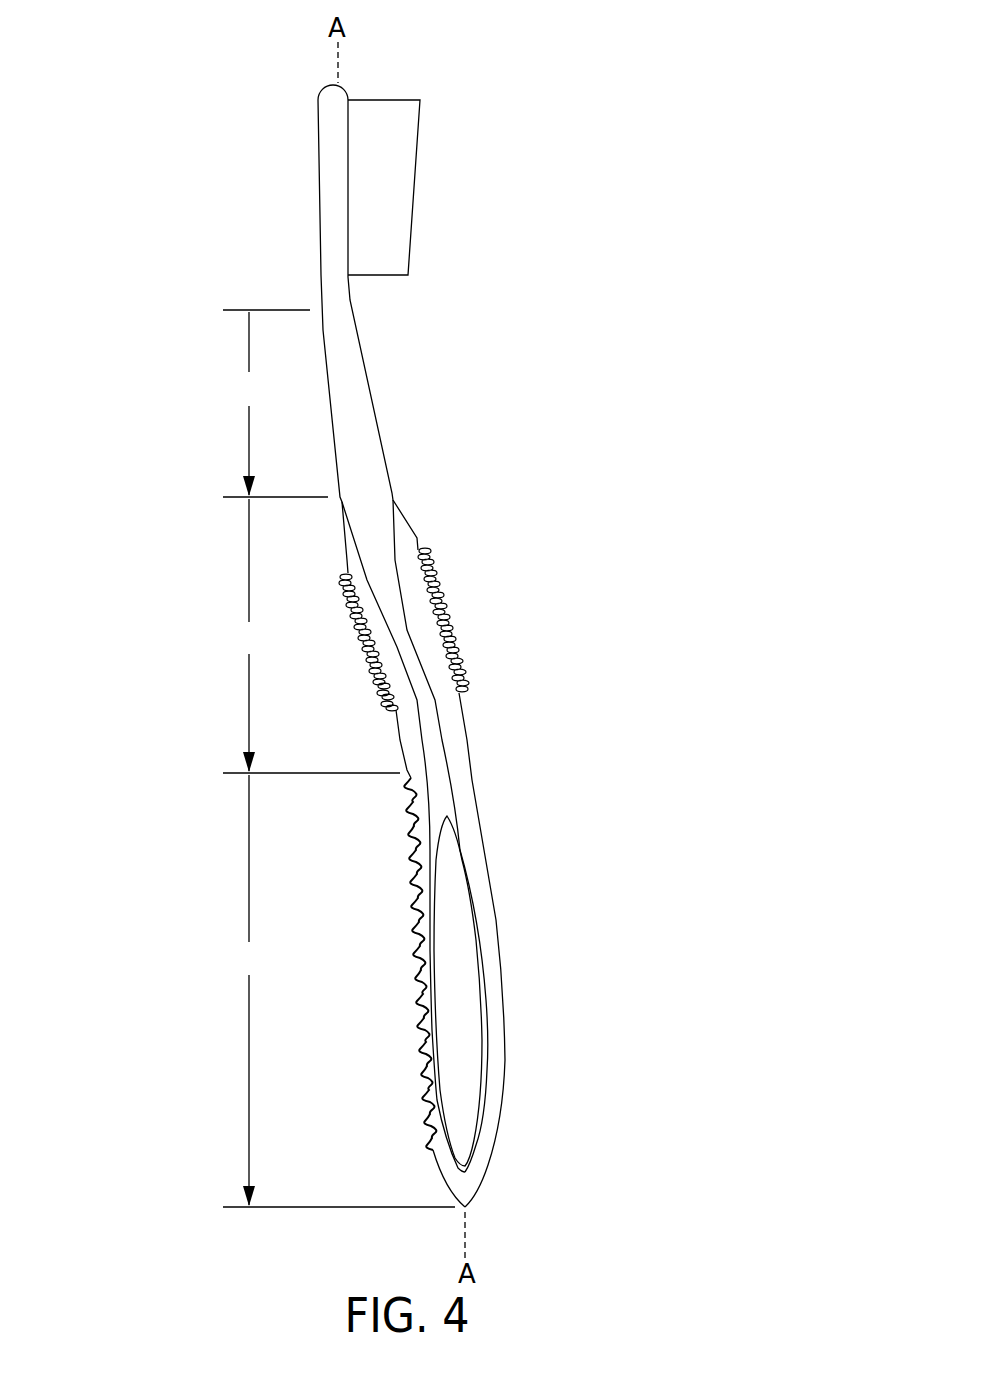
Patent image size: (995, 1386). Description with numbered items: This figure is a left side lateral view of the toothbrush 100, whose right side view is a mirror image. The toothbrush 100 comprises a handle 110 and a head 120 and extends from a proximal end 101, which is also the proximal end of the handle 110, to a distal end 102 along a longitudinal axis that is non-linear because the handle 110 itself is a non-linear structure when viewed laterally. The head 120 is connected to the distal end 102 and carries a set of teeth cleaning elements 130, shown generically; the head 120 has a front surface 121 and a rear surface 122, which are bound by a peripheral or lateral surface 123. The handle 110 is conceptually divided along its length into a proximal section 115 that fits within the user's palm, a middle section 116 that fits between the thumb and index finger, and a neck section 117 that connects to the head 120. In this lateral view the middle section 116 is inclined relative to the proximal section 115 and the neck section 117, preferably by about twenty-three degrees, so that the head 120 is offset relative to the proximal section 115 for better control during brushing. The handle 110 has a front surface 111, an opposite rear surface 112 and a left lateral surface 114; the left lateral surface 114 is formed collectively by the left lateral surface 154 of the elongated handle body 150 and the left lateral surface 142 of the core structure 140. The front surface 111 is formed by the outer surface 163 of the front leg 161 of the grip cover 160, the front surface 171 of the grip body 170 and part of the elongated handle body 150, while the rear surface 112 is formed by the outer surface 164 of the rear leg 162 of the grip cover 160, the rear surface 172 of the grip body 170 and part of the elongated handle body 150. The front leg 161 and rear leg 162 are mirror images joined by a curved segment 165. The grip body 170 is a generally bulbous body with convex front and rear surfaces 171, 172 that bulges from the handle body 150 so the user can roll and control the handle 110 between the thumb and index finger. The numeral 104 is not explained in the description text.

The toothbrush 100 is at (620, 147).
The proximal end 101 is at (467, 1209).
The distal end 102 is at (337, 85).
The neck 104 is at (350, 302).
The handle 110 is at (518, 671).
The front surface 111 is at (499, 882).
The rear surface 112 is at (408, 817).
The left lateral surface 114 is at (349, 349).
The proximal section 115 is at (247, 990).
The middle section 116 is at (249, 635).
The neck section 117 is at (250, 403).
The head 120 is at (304, 188).
The front surface 121 is at (349, 192).
The rear surface 122 is at (318, 227).
The peripheral or lateral surface 123 is at (333, 143).
The teeth cleaning elements 130 is at (387, 96).
The core structure 140 is at (459, 908).
The left lateral surface 142 is at (465, 973).
The elongated handle body 150 is at (357, 422).
The left lateral surface 154 is at (430, 722).
The grip cover 160 is at (486, 857).
The front leg 161 is at (497, 1037).
The rear leg 162 is at (414, 1050).
The outer surface 163 is at (507, 987).
The outer surface 164 is at (412, 993).
The curved segment 165 is at (472, 1190).
The grip body 170 is at (455, 609).
The front surface 171 is at (434, 580).
The rear surface 172 is at (367, 653).